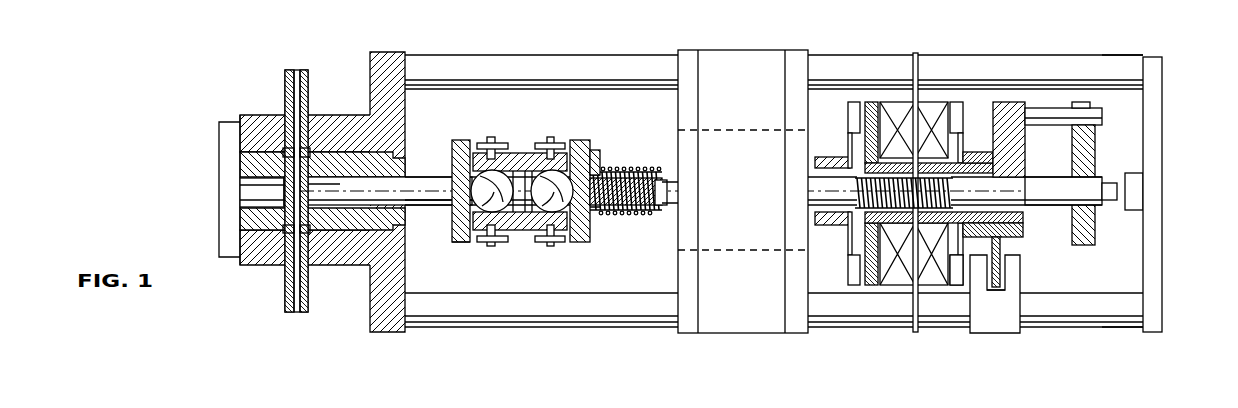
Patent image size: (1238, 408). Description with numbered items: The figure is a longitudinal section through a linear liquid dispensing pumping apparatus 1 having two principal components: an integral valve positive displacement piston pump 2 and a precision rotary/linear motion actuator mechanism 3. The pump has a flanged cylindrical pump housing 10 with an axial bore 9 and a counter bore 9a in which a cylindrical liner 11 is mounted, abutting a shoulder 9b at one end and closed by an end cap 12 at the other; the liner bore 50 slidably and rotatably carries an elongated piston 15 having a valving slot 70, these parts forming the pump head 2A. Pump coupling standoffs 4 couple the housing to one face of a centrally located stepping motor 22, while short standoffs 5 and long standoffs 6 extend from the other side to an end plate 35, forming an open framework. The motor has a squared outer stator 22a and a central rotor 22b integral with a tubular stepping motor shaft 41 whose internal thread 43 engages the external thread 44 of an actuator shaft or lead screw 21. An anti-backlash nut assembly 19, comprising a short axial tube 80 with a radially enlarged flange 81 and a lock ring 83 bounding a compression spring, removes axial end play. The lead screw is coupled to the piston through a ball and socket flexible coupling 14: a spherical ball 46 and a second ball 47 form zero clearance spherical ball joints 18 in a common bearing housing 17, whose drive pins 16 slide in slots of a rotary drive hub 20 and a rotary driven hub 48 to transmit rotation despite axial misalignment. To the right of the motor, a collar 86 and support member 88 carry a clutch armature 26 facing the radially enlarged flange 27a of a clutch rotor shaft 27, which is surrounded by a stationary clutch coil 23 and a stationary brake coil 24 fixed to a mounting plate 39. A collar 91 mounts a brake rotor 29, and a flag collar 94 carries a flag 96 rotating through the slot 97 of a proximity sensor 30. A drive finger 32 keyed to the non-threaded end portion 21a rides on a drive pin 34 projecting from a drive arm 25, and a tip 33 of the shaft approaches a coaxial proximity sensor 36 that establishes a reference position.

The linear liquid dispensing pumping apparatus 1 is at (764, 219).
The integral valve positive displacement piston pump 2 is at (437, 172).
The pump head 2A is at (262, 281).
The precision rotary/linear motion actuator mechanism 3 is at (606, 338).
The pump coupling standoffs 4 is at (522, 68).
The short standoffs 5 is at (840, 78).
The long standoffs 6 is at (1110, 70).
The axial bore 9 is at (405, 222).
The counter bore 9a is at (337, 150).
The shoulder 9b is at (396, 160).
The flanged cylindrical pump housing 10 is at (398, 56).
The cylindrical liner 11 is at (240, 163).
The end cap 12 is at (222, 250).
The ball and socket flexible coupling 14 is at (514, 189).
The piston 15 is at (455, 206).
The drive pins 16 is at (500, 243).
The common bearing housing 17 is at (515, 230).
The spherical ball joints 18 is at (488, 242).
The anti-backlash nut assembly 19 is at (646, 149).
The rotary drive hub 20 is at (586, 243).
The actuator shaft 21 is at (592, 222).
The non-threaded end portion 21a is at (1095, 186).
The stepping motor 22 is at (743, 210).
The stator 22a is at (735, 293).
The rotor 22b is at (740, 128).
The stationary clutch coil 23 is at (912, 292).
The stationary brake coil 24 is at (935, 288).
The drive arm 25 is at (1022, 156).
The clutch armature 26 is at (849, 272).
The clutch rotor shaft 27 is at (868, 286).
The radially enlarged flange 27a is at (870, 102).
The brake rotor 29 is at (958, 288).
The proximity sensor 30 is at (988, 322).
The drive finger 32 is at (1080, 246).
The tip 33 is at (1110, 202).
The drive pin 34 is at (1103, 118).
The end plate 35 is at (1161, 290).
The proximity sensor 36 is at (1135, 204).
The mounting plate 39 is at (916, 288).
The tubular stepping motor shaft 41 is at (666, 201).
The thread 43 is at (666, 188).
The thread 44 is at (940, 196).
The spherical ball 46 is at (556, 172).
The second ball 47 is at (486, 172).
The rotary driven hub 48 is at (458, 243).
The axial bore 50 is at (240, 193).
The valving slot 70 is at (340, 190).
The short axial length tube 80 is at (618, 216).
The radially enlarged flange 81 is at (600, 168).
The lock ring 83 is at (651, 216).
The collar 86 is at (840, 226).
The support member 88 is at (832, 157).
The collar 91 is at (982, 152).
The flag collar 94 is at (1018, 233).
The flag 96 is at (1005, 281).
The slot 97 is at (1012, 325).